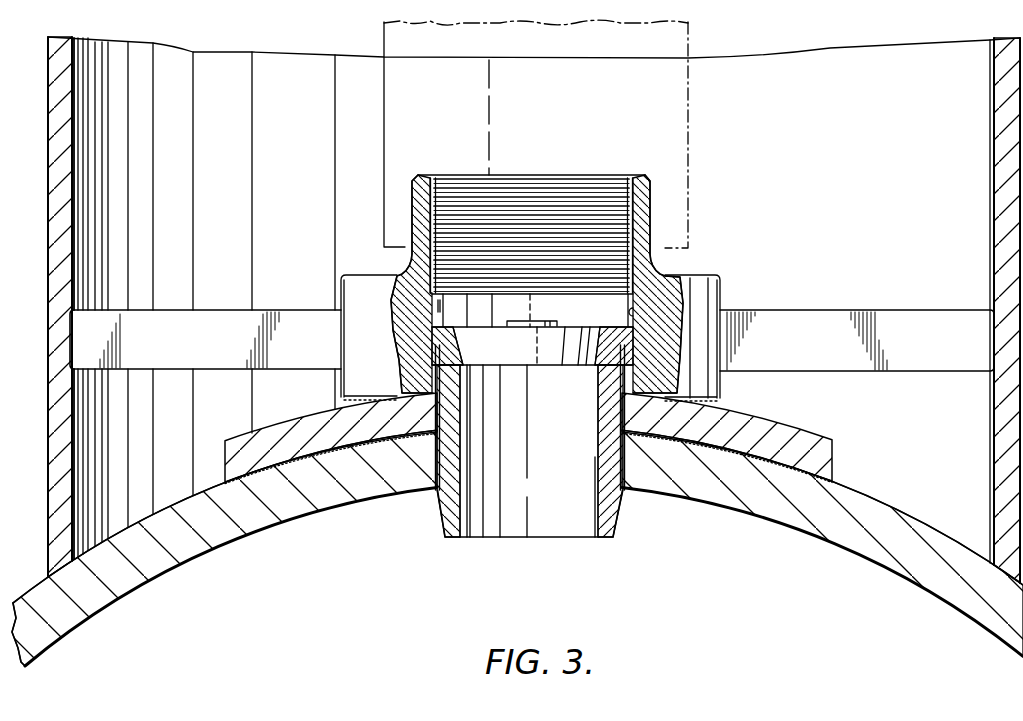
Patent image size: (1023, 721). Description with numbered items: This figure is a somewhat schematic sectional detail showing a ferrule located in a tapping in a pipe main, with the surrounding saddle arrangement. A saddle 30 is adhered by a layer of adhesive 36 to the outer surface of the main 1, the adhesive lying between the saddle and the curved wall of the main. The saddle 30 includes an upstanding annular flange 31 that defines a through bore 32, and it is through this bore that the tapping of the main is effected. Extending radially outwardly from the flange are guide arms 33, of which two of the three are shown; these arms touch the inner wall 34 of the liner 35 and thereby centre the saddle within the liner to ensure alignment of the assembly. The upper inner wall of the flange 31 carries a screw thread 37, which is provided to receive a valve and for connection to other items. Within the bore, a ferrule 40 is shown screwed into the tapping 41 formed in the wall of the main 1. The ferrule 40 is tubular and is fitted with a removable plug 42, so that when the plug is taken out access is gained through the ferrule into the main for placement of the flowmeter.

The main 1 is at (292, 490).
The saddle 30 is at (280, 433).
The annular flange 31 is at (360, 379).
The through bore 32 is at (387, 285).
The guide arms 33 is at (286, 328).
The inner wall 34 is at (70, 289).
The liner 35 is at (58, 250).
The adhesive 36 is at (280, 443).
The screw thread 37 is at (582, 190).
The ferrule 40 is at (611, 408).
The tapping 41 is at (437, 468).
The removable plug 42 is at (525, 361).